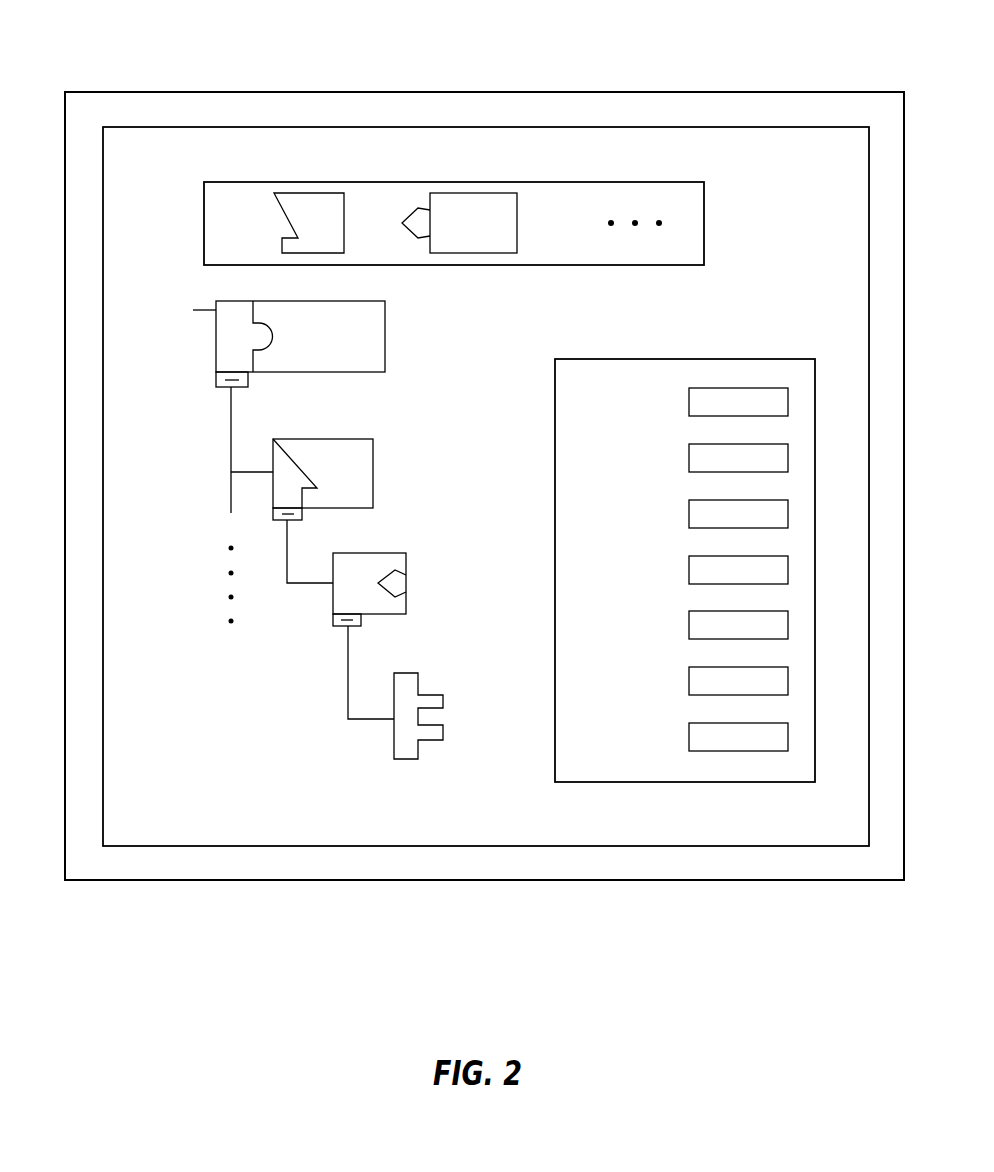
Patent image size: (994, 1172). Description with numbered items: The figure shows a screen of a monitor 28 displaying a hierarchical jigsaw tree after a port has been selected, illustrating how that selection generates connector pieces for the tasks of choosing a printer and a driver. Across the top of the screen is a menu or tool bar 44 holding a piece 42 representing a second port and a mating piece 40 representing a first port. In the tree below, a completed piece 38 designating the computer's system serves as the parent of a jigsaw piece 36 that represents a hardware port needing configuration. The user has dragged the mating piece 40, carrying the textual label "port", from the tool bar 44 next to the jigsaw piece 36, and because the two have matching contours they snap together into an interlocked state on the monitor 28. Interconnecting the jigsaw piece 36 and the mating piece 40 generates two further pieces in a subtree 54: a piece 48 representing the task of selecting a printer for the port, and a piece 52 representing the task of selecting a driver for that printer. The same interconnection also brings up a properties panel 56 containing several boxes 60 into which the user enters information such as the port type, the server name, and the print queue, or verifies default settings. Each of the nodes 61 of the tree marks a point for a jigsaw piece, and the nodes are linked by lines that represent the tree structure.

The monitor 28 is at (280, 861).
The jigsaw piece 36 is at (286, 452).
The completed piece 38 is at (385, 362).
The mating piece 40 is at (345, 472).
The piece 42 is at (305, 193).
The tool bar 44 is at (478, 182).
The piece 48 is at (450, 592).
The piece 52 is at (402, 752).
The subtree 54 is at (325, 648).
The properties panel 56 is at (690, 562).
The boxes 60 is at (730, 388).
The nodes 61 is at (222, 472).